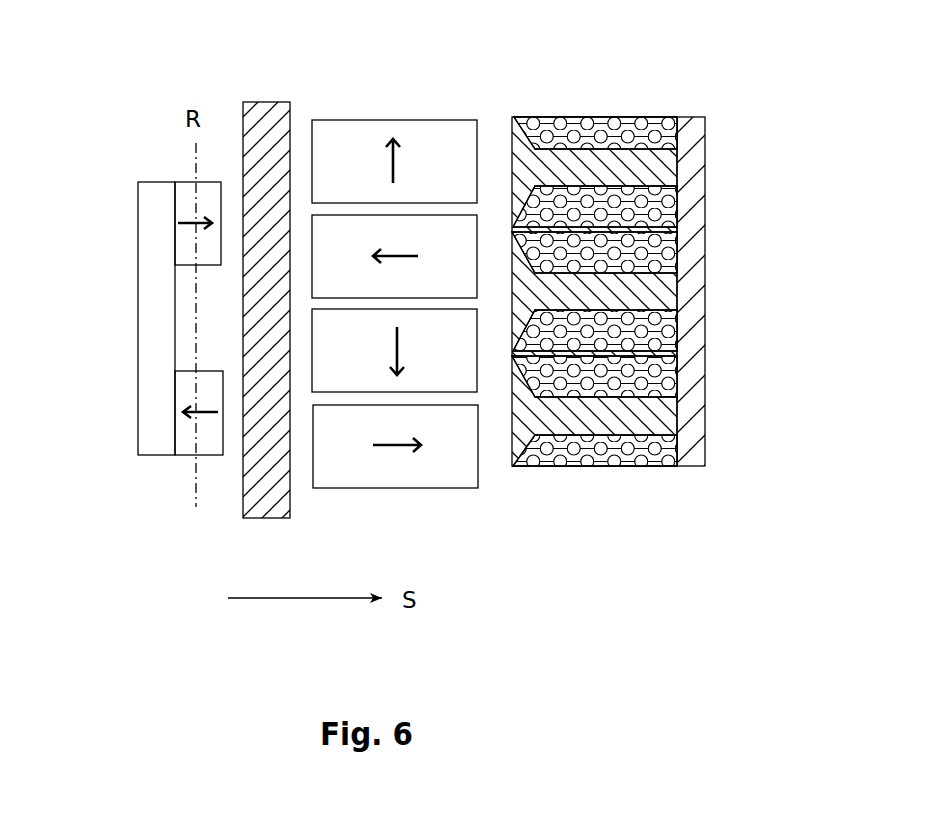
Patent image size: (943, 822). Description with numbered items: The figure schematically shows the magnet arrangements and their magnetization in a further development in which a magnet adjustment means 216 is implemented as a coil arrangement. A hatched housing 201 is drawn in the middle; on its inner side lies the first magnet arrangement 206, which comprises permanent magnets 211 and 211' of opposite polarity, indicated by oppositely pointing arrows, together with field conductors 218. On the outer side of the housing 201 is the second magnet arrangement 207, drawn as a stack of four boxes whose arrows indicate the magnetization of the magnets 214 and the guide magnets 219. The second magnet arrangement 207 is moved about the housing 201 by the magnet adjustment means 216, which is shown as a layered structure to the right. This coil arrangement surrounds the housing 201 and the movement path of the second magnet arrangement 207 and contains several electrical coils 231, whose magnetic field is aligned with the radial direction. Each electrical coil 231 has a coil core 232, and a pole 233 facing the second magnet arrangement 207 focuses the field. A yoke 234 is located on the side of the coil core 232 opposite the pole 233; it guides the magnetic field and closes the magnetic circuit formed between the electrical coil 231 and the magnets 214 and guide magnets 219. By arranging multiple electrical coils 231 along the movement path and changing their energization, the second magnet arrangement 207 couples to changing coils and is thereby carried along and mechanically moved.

The housing 201 is at (263, 132).
The first magnet arrangement 206 is at (125, 385).
The second magnet arrangement 207 is at (435, 316).
The permanent magnet 211 is at (127, 223).
The permanent magnet 211' is at (129, 413).
The magnet 214 is at (349, 150).
The magnet adjustment means 216 is at (666, 328).
The field conductor 218 is at (155, 297).
The guide magnet 219 is at (435, 259).
The electrical coil 231 is at (657, 206).
The coil core 232 is at (647, 161).
The pole 233 is at (522, 162).
The yoke 234 is at (692, 257).